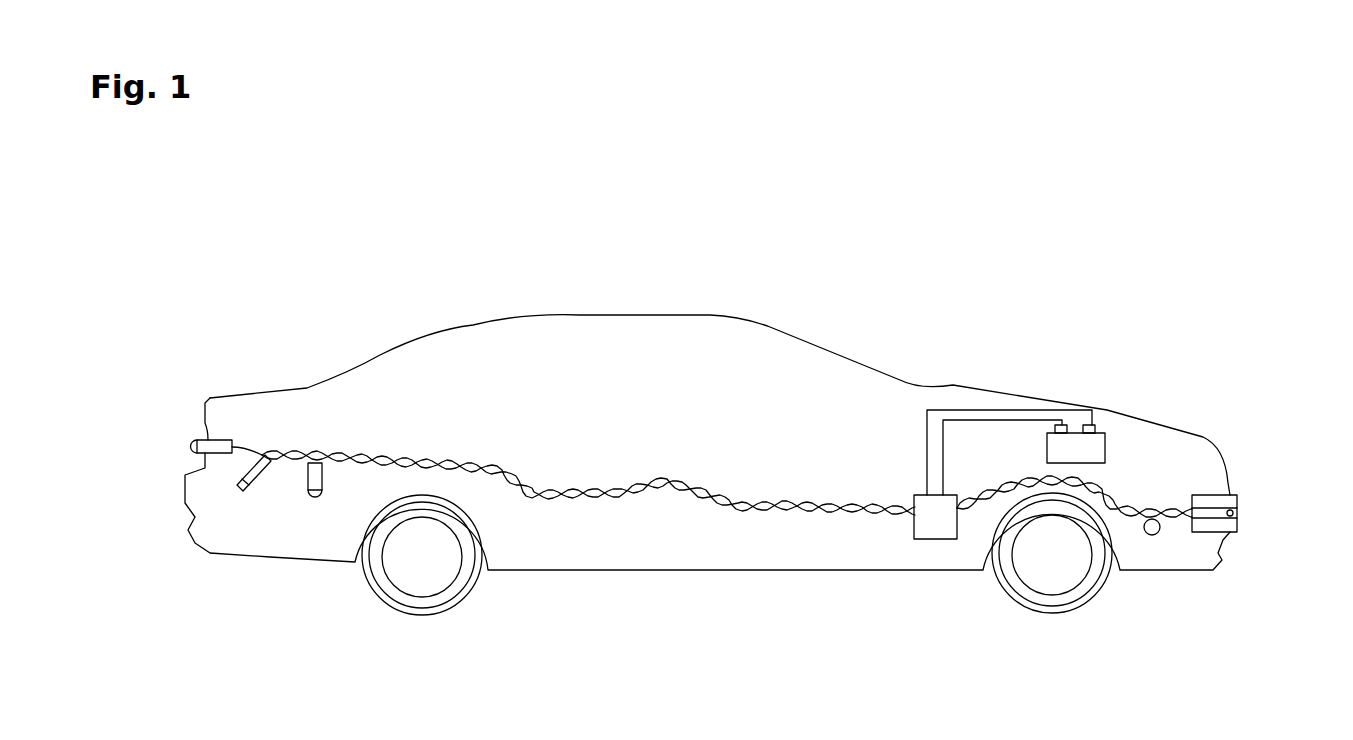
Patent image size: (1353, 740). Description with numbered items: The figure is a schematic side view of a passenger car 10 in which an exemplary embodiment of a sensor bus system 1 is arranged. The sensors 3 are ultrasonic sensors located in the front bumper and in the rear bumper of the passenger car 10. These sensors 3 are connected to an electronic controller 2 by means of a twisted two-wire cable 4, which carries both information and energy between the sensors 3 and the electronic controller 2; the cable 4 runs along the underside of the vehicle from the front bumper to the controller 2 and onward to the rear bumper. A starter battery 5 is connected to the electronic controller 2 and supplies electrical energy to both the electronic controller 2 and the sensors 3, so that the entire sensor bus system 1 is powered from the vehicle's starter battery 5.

The sensor bus system 1 is at (860, 470).
The passenger car 10 is at (938, 308).
The electronic controller 2 is at (925, 540).
The sensors 3 is at (190, 447).
The twisted two-wire cable 4 is at (672, 490).
The starter battery 5 is at (1097, 447).